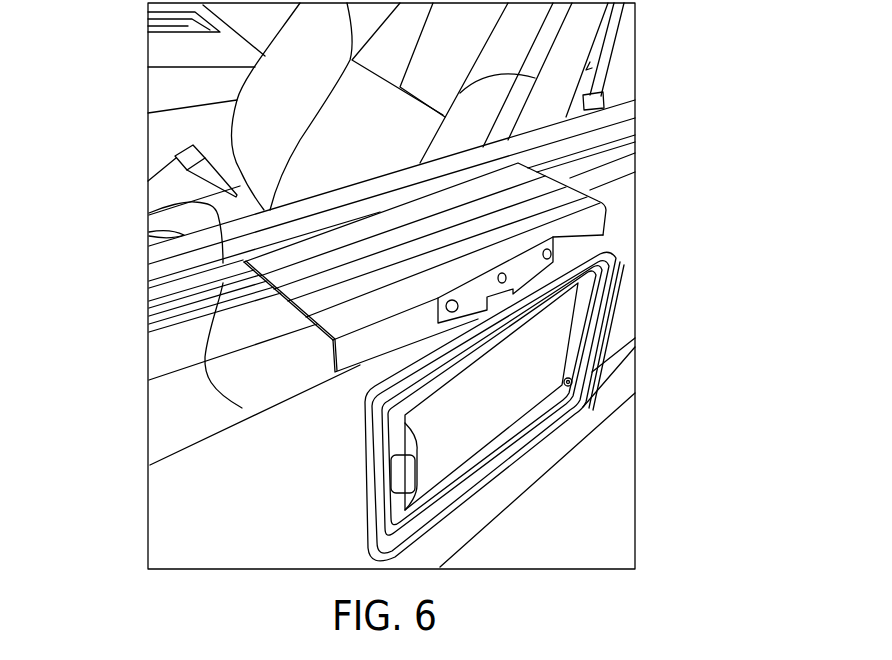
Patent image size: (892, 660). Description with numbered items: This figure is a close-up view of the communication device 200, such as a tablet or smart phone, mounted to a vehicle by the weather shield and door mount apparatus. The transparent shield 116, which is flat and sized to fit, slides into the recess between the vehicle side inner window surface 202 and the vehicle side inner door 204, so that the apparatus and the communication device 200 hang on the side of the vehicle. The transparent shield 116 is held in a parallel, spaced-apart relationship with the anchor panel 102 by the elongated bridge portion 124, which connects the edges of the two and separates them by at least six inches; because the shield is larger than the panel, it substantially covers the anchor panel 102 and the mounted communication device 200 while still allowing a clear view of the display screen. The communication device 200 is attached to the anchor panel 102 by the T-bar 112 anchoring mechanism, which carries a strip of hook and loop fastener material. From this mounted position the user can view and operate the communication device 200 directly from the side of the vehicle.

The anchor panel 102 is at (608, 210).
The T-bar 112 is at (607, 247).
The transparent shield 116 is at (360, 214).
The elongated bridge portion 124 is at (557, 193).
The communication device 200 is at (603, 318).
The vehicle side inner window surface 202 is at (149, 213).
The vehicle side inner door 204 is at (242, 408).